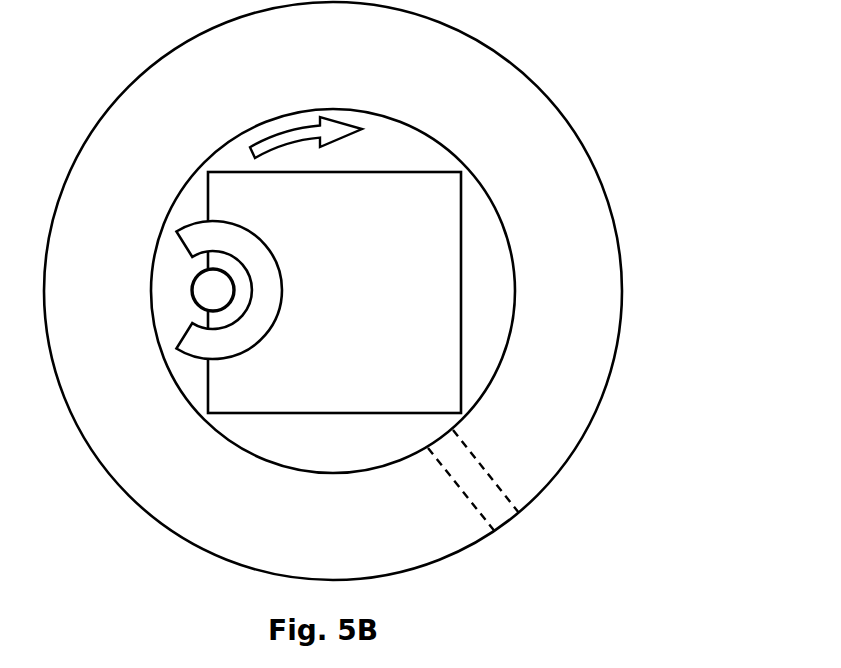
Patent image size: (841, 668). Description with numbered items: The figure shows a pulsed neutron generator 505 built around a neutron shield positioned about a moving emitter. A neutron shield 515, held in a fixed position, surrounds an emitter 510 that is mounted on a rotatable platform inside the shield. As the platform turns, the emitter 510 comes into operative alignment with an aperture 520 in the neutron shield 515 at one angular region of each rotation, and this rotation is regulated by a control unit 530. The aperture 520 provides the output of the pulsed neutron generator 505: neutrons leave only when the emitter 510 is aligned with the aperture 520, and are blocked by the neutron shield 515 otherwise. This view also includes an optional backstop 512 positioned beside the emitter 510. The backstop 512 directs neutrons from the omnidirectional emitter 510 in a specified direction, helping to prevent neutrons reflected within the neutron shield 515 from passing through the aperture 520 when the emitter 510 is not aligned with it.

The pulsed neutron generator 505 is at (380, 291).
The emitter 510 is at (202, 291).
The backstop 512 is at (252, 252).
The neutron shield 515 is at (472, 65).
The aperture 520 is at (507, 523).
The control unit 530 is at (380, 395).